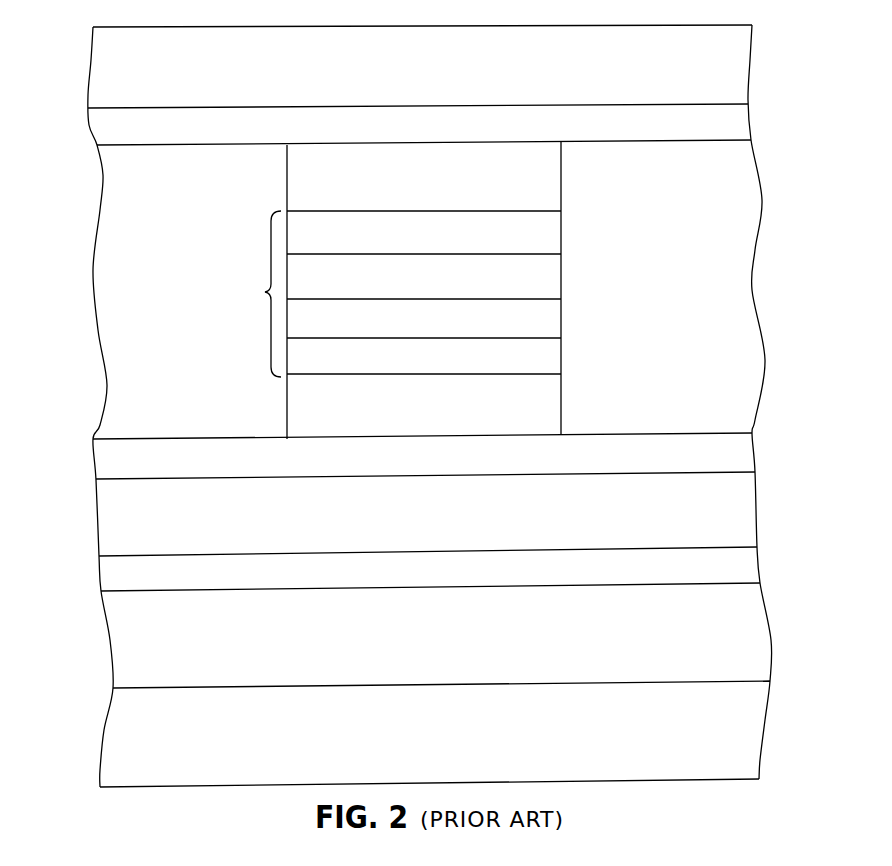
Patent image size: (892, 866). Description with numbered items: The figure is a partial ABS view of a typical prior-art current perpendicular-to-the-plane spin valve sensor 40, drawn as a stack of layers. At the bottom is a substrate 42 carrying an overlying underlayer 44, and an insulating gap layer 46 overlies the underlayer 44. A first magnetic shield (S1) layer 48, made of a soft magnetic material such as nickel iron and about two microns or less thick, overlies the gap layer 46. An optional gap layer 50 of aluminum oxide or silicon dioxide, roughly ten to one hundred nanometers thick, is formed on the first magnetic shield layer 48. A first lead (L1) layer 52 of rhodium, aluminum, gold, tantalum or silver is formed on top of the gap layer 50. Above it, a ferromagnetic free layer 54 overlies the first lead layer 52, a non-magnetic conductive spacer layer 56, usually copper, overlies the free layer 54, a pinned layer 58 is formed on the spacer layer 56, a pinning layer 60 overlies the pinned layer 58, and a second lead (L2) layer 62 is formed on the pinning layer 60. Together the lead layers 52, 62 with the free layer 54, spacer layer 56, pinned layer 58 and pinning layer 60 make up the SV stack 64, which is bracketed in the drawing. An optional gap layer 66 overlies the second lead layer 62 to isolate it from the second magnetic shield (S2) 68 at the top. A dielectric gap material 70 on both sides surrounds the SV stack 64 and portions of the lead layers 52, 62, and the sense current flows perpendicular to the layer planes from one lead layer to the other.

The CPP SV sensor 40 is at (145, 797).
The substrate 42 is at (752, 732).
The underlayer 44 is at (758, 625).
The insulating gap layer 46 is at (752, 565).
The first magnetic shield (S1) layer 48 is at (750, 509).
The gap layer 50 is at (745, 451).
The first lead (L1) layer 52 is at (558, 418).
The free layer 54 is at (558, 346).
The spacer layer 56 is at (558, 317).
The pinned layer 58 is at (558, 276).
The pinning layer 60 is at (558, 230).
The second lead (L2) layer 62 is at (558, 178).
The SV stack 64 is at (392, 294).
The gap layer 66 is at (740, 118).
The second magnetic shield (S2) 68 is at (740, 61).
The dielectric gap material 70 is at (128, 229).